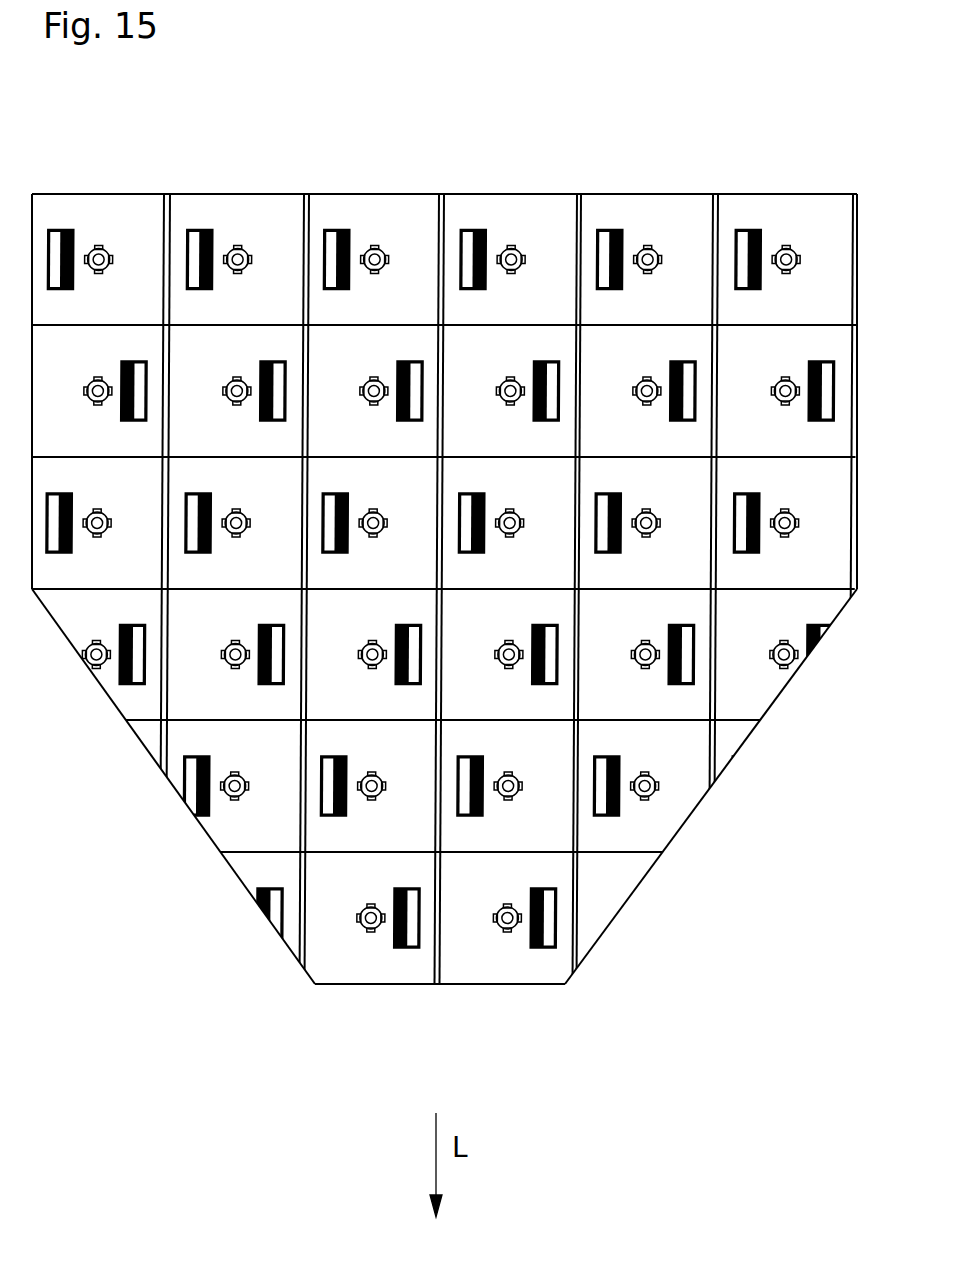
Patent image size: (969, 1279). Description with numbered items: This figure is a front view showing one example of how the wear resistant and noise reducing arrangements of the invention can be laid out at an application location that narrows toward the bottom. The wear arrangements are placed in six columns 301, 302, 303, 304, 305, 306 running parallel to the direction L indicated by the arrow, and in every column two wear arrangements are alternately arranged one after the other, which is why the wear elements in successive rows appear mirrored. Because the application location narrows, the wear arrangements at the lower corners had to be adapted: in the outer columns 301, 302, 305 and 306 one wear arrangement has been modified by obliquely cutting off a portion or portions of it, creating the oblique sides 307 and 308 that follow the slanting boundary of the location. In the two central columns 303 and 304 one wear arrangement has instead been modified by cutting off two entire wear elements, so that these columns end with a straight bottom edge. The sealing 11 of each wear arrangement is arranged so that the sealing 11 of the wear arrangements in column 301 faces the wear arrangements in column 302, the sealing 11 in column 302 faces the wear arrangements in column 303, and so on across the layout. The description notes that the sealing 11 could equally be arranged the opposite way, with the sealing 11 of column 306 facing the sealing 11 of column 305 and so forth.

The column 301 is at (100, 513).
The column 302 is at (235, 513).
The column 303 is at (375, 513).
The column 304 is at (509, 513).
The column 305 is at (645, 513).
The column 306 is at (785, 513).
The oblique side 307 is at (207, 832).
The oblique side 308 is at (640, 883).
The sealing 11 is at (158, 754).